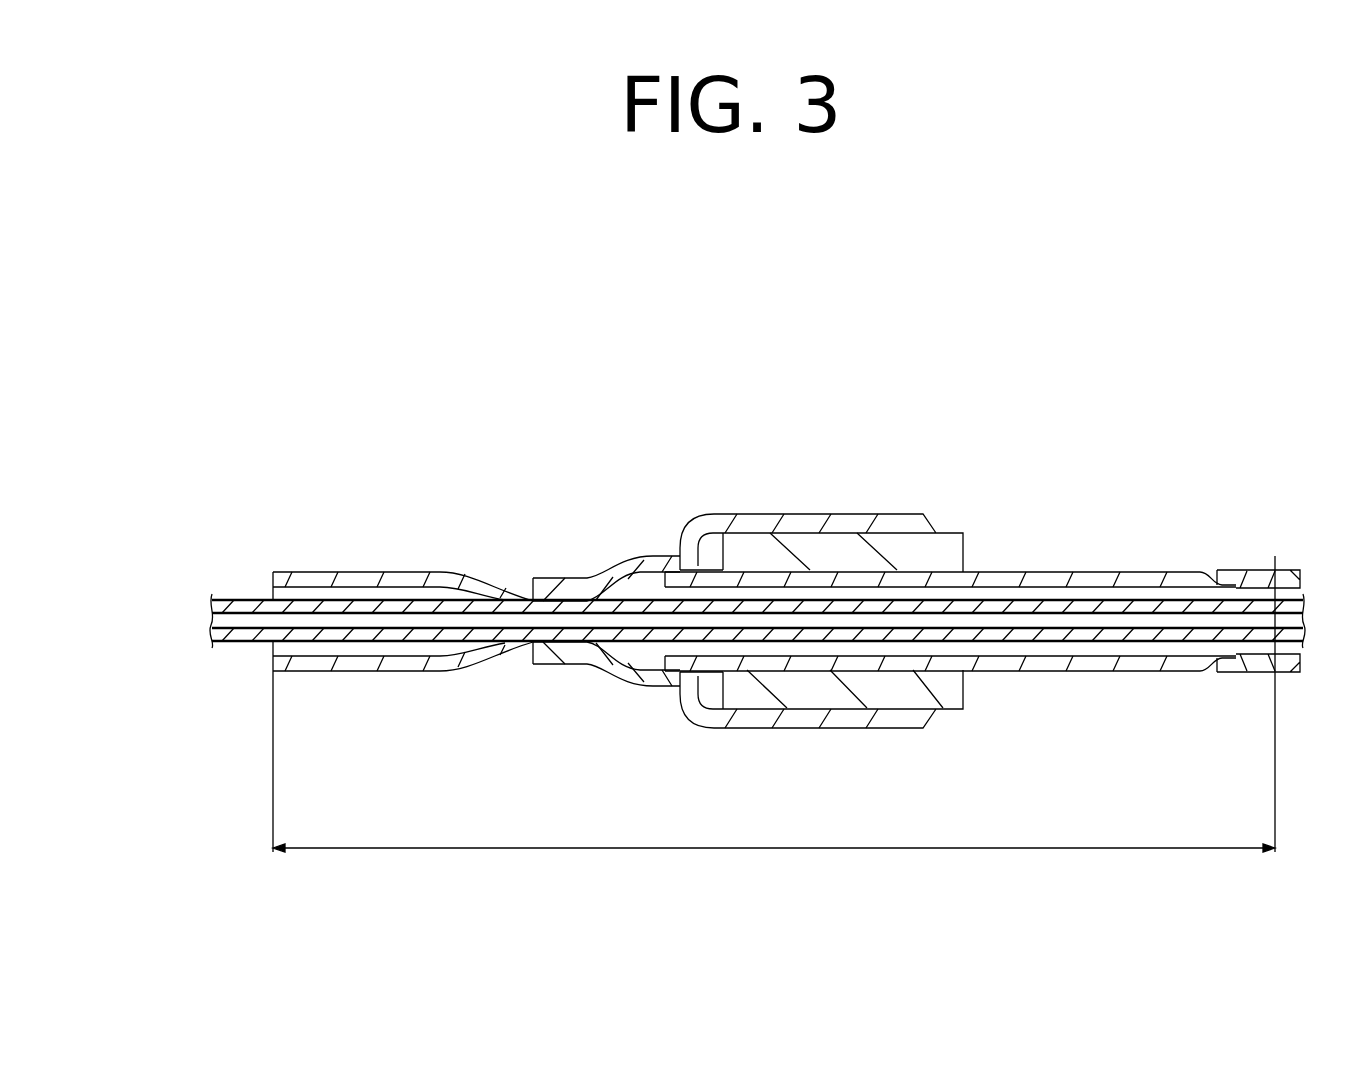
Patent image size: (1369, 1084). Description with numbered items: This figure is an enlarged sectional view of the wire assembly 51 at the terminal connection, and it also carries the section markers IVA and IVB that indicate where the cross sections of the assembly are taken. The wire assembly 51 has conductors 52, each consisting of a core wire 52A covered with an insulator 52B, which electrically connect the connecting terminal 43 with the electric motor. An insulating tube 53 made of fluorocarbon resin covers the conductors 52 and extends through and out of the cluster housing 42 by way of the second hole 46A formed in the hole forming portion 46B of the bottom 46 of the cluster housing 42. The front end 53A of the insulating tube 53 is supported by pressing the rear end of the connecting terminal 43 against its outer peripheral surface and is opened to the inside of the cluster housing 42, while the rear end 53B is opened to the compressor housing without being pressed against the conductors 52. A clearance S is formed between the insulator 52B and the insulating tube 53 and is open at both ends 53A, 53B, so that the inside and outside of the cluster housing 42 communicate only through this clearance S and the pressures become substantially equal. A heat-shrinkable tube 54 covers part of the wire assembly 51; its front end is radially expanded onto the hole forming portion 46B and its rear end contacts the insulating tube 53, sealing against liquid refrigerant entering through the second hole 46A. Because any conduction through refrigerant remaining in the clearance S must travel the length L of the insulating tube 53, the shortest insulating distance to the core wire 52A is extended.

The cluster housing 42 is at (935, 532).
The connecting terminal 43 is at (1289, 668).
The bottom 46 is at (948, 522).
The second hole 46A is at (956, 574).
The hole forming portion 46B is at (837, 538).
The wire assembly 51 is at (365, 505).
The conductor 52 is at (467, 527).
The core wire 52A is at (405, 600).
The insulator 52B is at (457, 604).
The insulating tube 53 is at (1082, 573).
The front end of the insulating tube 53A is at (1275, 575).
The rear end of the insulating tube 53B is at (271, 592).
The heat-shrinkable tube 54 is at (760, 520).
The clearance S is at (1131, 588).
The length of the insulating tube L is at (771, 850).
The section line IVA is at (557, 556).
The section line IVB is at (343, 556).